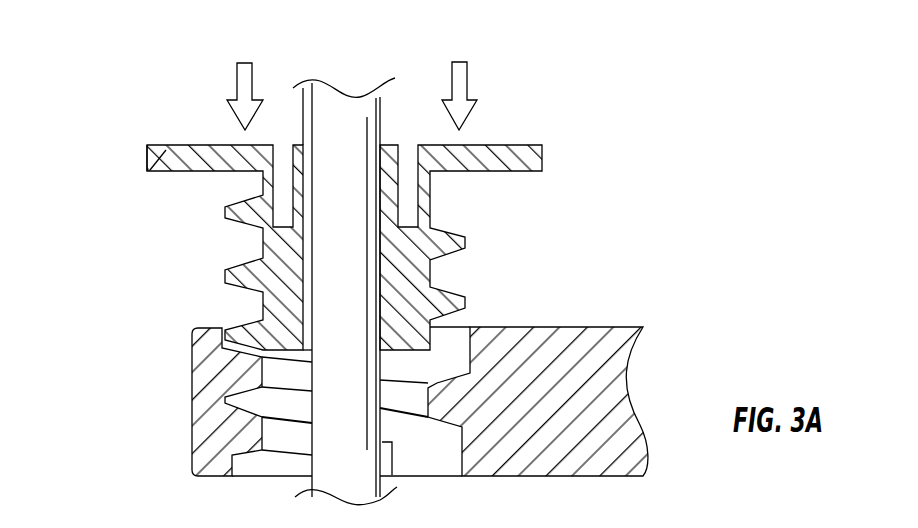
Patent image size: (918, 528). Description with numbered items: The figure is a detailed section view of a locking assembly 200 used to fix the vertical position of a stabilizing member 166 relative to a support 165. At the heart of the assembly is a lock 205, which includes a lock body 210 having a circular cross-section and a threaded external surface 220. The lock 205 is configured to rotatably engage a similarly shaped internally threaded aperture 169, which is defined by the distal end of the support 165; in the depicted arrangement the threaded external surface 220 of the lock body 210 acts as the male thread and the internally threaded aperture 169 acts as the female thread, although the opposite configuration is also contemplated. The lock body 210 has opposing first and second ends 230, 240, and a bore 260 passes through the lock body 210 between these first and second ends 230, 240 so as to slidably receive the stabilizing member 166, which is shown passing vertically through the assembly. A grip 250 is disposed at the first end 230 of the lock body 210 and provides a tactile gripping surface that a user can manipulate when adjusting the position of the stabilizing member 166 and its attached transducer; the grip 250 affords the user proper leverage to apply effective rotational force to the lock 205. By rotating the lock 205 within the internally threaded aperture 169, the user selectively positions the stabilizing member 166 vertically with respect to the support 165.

The support 165 is at (601, 332).
The stabilizing member 166 is at (355, 115).
The internally threaded aperture 169 is at (442, 462).
The locking assembly 200 is at (668, 180).
The lock 205 is at (548, 140).
The lock body 210 is at (430, 215).
The threaded external surface 220 is at (242, 272).
The first end 230 is at (178, 128).
The second end 240 is at (230, 308).
The grip 250 is at (150, 173).
The bore 260 is at (303, 88).